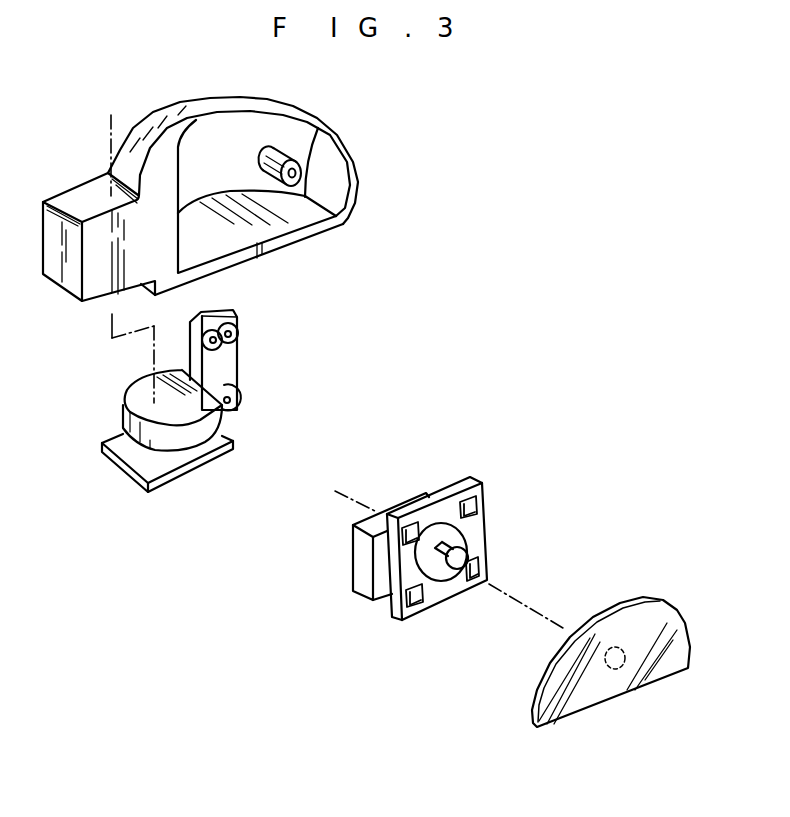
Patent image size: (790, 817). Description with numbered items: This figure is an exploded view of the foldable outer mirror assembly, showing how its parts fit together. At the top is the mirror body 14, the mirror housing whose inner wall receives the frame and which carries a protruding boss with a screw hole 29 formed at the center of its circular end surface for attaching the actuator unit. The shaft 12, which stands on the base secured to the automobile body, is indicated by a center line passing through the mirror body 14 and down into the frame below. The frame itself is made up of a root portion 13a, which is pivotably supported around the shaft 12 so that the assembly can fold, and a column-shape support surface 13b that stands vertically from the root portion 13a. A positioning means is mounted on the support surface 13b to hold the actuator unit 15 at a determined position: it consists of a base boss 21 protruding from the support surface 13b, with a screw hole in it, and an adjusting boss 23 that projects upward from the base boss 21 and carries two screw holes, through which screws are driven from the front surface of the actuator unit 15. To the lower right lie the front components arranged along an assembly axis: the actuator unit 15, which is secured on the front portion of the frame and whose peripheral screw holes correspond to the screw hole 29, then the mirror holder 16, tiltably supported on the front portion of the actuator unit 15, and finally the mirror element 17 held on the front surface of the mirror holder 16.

The shaft 12 is at (110, 135).
The root portion 13a is at (122, 464).
The support surface 13b is at (240, 367).
The mirror body 14 is at (181, 105).
The actuator unit 15 is at (357, 571).
The mirror holder 16 is at (480, 524).
The mirror element 17 is at (655, 604).
The base boss 21 is at (241, 402).
The adjusting boss 23 is at (240, 336).
The screw hole 29 is at (302, 170).